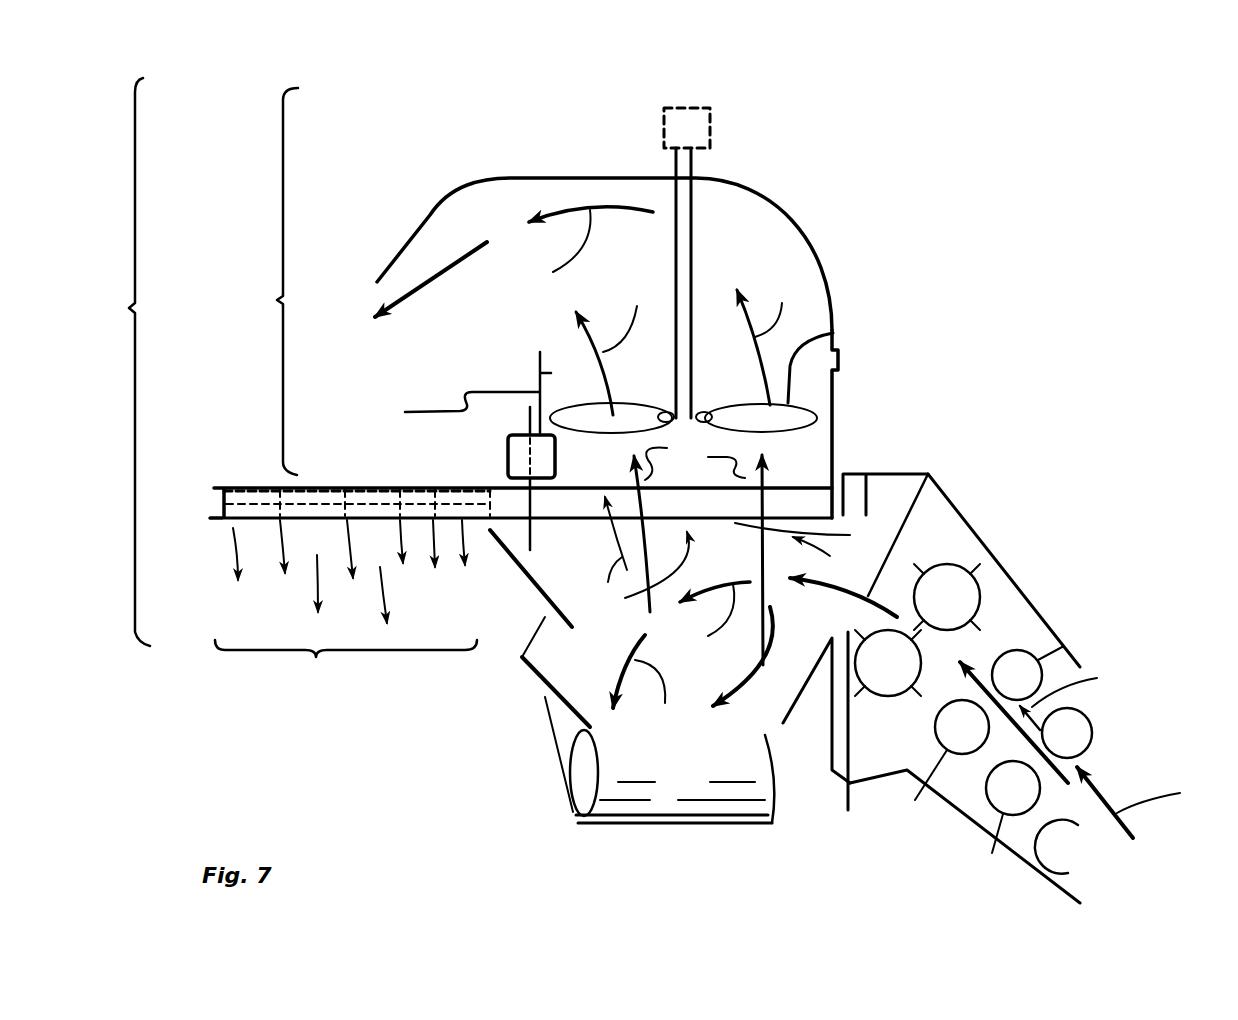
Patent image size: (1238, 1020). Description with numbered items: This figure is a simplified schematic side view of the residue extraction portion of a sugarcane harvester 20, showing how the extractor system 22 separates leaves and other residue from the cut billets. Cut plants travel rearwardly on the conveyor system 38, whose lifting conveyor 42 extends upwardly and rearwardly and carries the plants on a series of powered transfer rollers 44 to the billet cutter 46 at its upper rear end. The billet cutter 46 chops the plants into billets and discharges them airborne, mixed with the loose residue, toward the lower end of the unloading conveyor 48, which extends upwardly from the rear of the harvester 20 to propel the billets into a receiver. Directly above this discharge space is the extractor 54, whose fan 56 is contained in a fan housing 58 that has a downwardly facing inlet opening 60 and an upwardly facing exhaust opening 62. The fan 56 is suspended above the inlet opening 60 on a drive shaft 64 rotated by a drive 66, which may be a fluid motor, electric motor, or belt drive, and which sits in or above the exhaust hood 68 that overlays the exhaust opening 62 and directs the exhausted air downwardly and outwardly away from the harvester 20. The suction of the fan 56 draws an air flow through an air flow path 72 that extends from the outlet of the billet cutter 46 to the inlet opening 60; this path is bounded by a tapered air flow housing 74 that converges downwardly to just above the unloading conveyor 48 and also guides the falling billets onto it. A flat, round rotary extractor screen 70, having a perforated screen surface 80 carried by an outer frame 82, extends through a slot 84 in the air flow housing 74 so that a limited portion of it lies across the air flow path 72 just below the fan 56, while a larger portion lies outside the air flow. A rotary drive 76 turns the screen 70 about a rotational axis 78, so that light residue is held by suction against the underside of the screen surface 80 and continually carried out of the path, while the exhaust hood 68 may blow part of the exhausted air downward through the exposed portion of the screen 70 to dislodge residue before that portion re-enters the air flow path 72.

The harvester 20 is at (1114, 252).
The extractor system 22 is at (119, 362).
The extractor 54 is at (267, 281).
The fan 56 is at (833, 390).
The fan housing 58 is at (834, 333).
The inlet opening 60 is at (810, 473).
The exhaust opening 62 is at (563, 353).
The drive shaft 64 is at (694, 208).
The drive 66 is at (710, 112).
The exhaust hood 68 is at (807, 242).
The rotary extractor screen 70 is at (253, 487).
The air flow path 72 is at (557, 563).
The air flow housing 74 is at (547, 637).
The rotary drive 76 is at (508, 457).
The rotational axis 78 is at (527, 415).
The screen surface 80 is at (327, 487).
The outer frame 82 is at (223, 500).
The slot 84 is at (525, 578).
The unloading conveyor 48 is at (777, 790).
The billet cutter 46 is at (958, 558).
The transfer rollers 44 is at (1068, 646).
The conveyor system 38 is at (1003, 563).
The lifting conveyor 42 is at (981, 711).